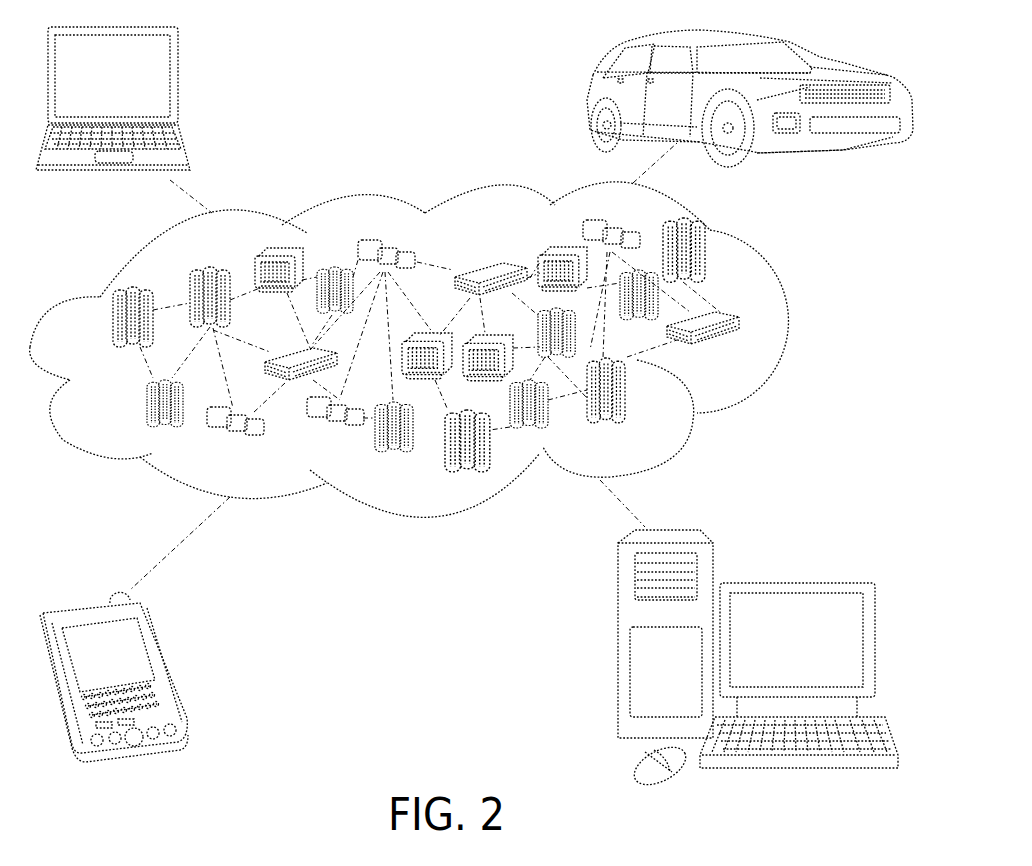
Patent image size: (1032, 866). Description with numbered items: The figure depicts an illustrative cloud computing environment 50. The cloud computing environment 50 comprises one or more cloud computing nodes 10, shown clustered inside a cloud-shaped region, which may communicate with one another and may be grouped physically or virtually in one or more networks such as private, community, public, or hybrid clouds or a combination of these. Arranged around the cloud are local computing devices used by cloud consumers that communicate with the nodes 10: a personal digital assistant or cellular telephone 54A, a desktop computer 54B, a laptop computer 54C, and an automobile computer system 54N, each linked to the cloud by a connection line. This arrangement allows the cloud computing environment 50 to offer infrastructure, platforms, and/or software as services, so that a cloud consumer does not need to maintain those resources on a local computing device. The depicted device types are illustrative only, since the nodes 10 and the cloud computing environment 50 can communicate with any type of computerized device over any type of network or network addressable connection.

The cloud computing nodes 10 is at (742, 353).
The cloud computing environment 50 is at (797, 332).
The personal digital assistant or cellular telephone 54A is at (170, 667).
The desktop computer 54B is at (795, 582).
The laptop computer 54C is at (178, 82).
The automobile computer system 54N is at (585, 95).